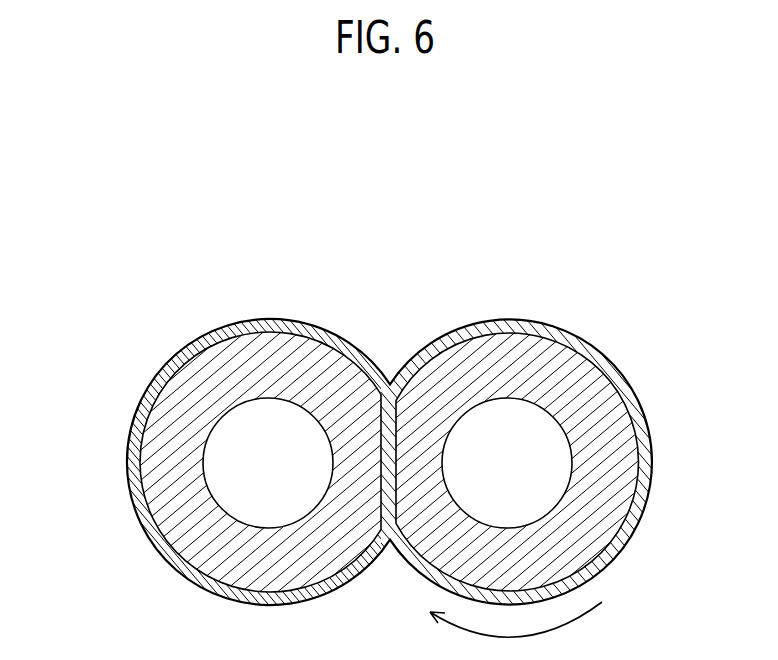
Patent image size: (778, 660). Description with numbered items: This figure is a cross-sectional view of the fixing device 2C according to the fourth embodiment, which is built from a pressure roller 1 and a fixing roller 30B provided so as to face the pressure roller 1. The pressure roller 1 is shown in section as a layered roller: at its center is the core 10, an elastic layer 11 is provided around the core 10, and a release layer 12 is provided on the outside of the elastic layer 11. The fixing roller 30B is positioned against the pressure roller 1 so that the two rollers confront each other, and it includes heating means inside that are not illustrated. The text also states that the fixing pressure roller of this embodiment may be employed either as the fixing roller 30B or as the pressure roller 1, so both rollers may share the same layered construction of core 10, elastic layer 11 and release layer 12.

The fixing device 2C is at (663, 243).
The pressure roller 1 is at (119, 567).
The release layer 12 is at (185, 355).
The elastic layer 11 is at (188, 405).
The core 10 is at (233, 473).
The fixing roller 30B is at (567, 538).